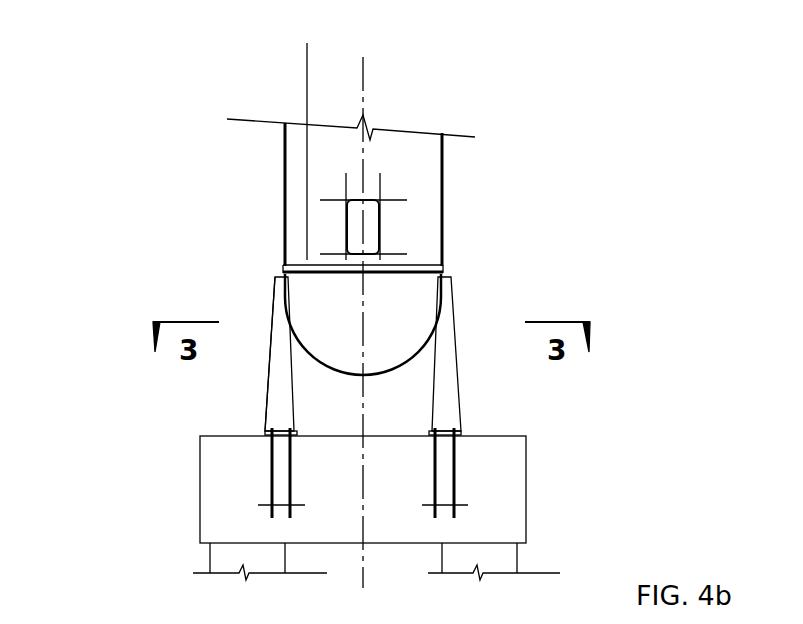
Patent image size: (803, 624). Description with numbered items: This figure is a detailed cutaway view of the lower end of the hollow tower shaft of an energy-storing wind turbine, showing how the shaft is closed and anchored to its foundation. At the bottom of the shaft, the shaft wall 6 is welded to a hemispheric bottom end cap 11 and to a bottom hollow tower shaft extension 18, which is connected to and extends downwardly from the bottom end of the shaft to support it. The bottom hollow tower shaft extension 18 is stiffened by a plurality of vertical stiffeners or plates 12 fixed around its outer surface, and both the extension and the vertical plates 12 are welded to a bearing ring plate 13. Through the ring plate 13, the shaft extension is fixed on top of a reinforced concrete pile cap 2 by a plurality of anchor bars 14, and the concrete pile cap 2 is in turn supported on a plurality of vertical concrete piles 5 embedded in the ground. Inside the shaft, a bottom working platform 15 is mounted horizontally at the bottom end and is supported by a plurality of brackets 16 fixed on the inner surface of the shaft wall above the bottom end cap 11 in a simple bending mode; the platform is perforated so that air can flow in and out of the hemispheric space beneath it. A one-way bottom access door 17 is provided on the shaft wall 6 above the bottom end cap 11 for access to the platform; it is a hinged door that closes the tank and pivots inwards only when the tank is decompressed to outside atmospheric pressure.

The reinforced concrete pile cap 2 is at (503, 501).
The vertical concrete piles 5 is at (225, 558).
The shaft wall 6 is at (443, 198).
The hemispheric bottom end cap 11 is at (446, 353).
The vertical stiffeners or plates 12 is at (417, 340).
The bearing ring plate 13 is at (268, 432).
The anchor bars 14 is at (457, 477).
The bottom working platform 15 is at (307, 43).
The brackets 16 is at (407, 246).
The one-way bottom access door 17 is at (345, 223).
The bottom hollow tower shaft extension 18 is at (275, 382).